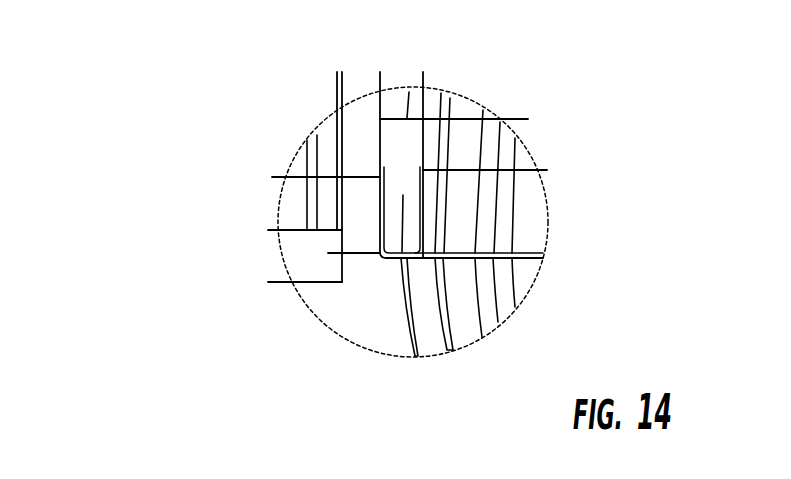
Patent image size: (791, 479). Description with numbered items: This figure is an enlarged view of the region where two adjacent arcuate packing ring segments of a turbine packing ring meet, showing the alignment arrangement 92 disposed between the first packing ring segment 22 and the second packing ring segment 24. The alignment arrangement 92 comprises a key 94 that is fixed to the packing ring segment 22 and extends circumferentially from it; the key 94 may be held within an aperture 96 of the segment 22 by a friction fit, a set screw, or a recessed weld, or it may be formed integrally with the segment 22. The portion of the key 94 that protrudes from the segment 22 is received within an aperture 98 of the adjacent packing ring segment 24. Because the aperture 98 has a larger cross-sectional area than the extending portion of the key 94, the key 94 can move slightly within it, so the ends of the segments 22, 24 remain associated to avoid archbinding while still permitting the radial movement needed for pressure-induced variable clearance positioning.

The first packing ring segment 22 is at (361, 124).
The second packing ring segment 24 is at (372, 308).
The alignment arrangement 92 is at (170, 141).
The key 94 is at (406, 190).
The aperture 96 is at (420, 147).
The aperture 98 is at (426, 234).